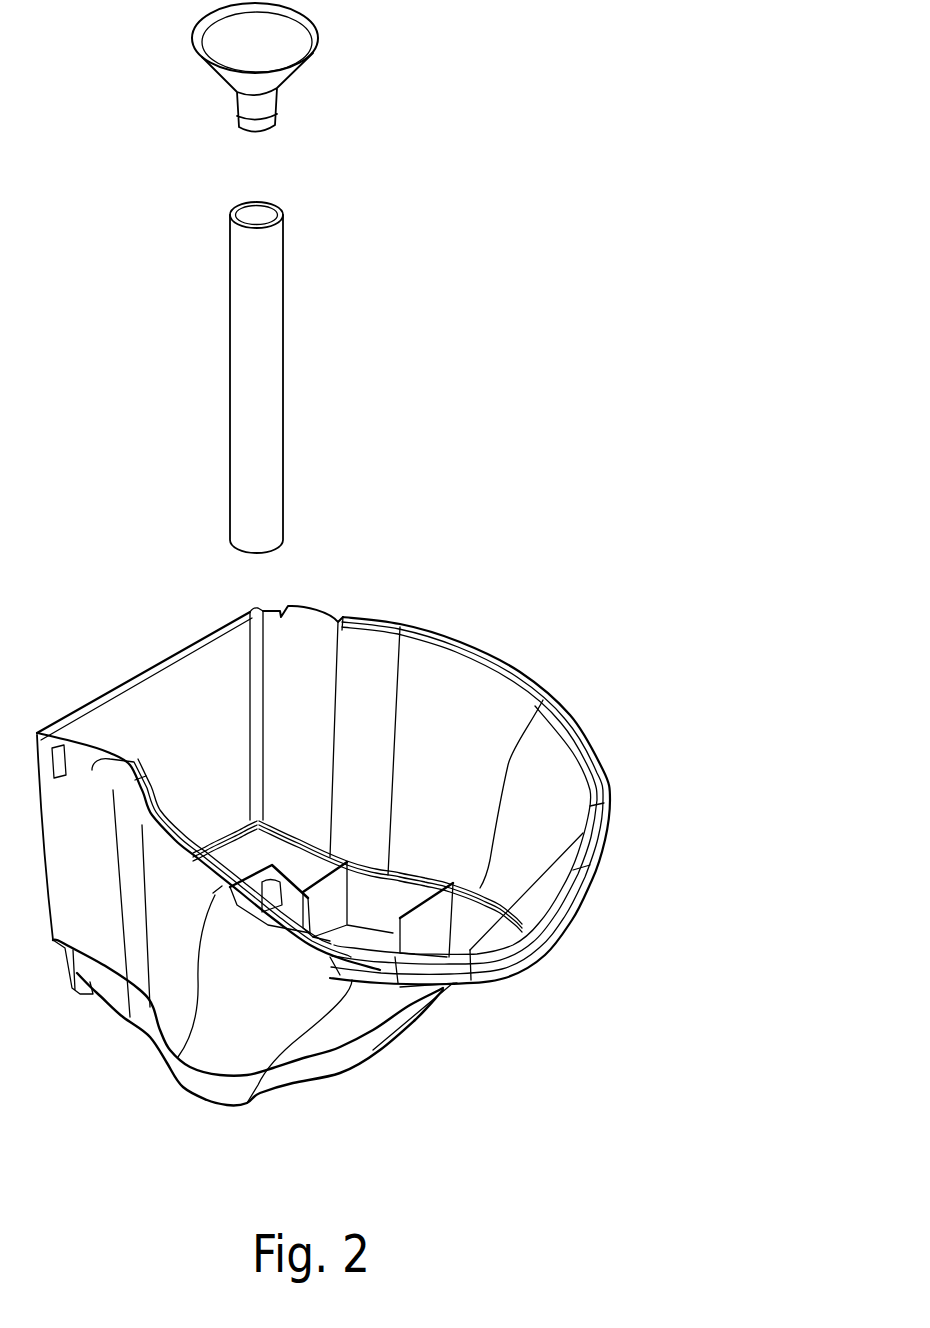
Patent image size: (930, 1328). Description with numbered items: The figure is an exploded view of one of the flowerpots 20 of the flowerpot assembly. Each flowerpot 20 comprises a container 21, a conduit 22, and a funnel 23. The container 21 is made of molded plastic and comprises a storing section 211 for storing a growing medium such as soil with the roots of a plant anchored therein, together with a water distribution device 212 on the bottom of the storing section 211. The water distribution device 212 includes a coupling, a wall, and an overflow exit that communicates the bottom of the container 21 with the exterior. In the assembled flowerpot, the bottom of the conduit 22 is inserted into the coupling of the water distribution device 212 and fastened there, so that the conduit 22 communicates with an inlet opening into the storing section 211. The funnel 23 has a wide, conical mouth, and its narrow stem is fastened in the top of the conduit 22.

The flowerpot 20 is at (555, 290).
The container 21 is at (523, 673).
The storing section 211 is at (556, 781).
The water distribution device 212 is at (352, 940).
The conduit 22 is at (270, 378).
The funnel 23 is at (318, 42).